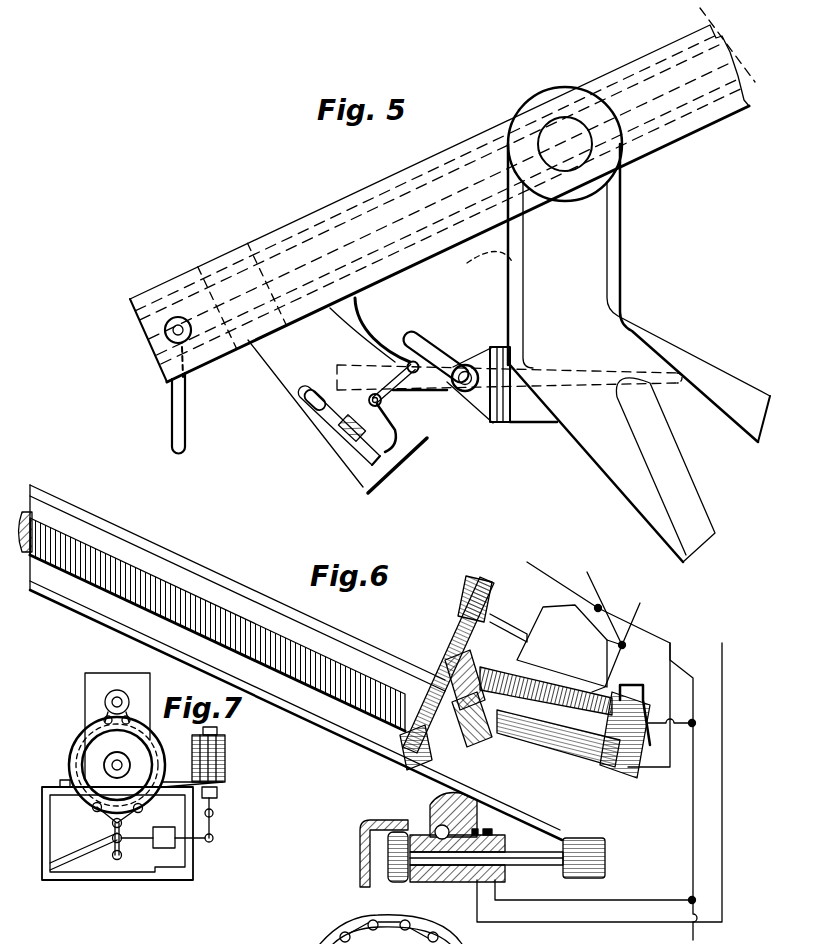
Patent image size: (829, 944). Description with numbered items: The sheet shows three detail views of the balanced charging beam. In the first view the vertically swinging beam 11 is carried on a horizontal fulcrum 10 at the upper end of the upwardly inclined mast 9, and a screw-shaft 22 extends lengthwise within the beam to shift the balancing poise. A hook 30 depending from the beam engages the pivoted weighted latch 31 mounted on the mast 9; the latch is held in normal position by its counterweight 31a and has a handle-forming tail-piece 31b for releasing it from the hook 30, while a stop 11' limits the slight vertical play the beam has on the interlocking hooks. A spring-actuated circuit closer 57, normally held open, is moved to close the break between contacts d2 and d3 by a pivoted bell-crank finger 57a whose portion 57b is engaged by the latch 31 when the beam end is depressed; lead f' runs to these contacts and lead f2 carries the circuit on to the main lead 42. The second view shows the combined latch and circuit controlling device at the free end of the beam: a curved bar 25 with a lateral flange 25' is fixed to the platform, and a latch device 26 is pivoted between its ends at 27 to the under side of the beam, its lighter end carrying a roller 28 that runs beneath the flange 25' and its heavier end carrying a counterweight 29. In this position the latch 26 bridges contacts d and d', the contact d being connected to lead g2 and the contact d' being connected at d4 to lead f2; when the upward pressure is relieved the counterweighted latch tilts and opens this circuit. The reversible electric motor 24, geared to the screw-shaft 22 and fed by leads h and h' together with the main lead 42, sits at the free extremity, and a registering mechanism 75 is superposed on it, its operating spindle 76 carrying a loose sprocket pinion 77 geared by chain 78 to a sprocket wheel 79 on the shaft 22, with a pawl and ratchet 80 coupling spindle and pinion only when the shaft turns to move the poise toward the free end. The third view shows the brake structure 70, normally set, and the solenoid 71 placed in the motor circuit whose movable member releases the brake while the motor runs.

In FIG. 5, the mast 9 is at (677, 354).
In FIG. 5, the horizontal fulcrum 10 is at (548, 134).
In FIG. 5, the beam 11 is at (442, 195).
In FIG. 6, the beam 11 is at (296, 662).
In FIG. 5, the stop 11' is at (618, 353).
In FIG. 5, the screw-shaft 22 is at (390, 220).
In FIG. 6, the screw-shaft 22 is at (360, 712).
In FIG. 6, the reversible electric motor 24 is at (553, 757).
In FIG. 6, the curved bar 25 is at (340, 861).
In FIG. 6, the flange 25' is at (364, 842).
In FIG. 6, the latch device 26 is at (467, 882).
In FIG. 6, the pivot 27 is at (433, 830).
In FIG. 6, the roller 28 is at (402, 883).
In FIG. 6, the counterweight 29 is at (598, 878).
In FIG. 5, the hook 30 is at (380, 327).
In FIG. 5, the pivoted weighted latch 31 is at (430, 360).
In FIG. 5, the counterweight 31a is at (352, 355).
In FIG. 5, the tail-piece 31b is at (556, 368).
In FIG. 6, the main lead 42 is at (636, 646).
In FIG. 5, the circuit closer 57 is at (380, 453).
In FIG. 5, the finger 57a is at (400, 421).
In FIG. 5, the finger portion 57b is at (368, 390).
In FIG. 6, the brake structure 70 is at (605, 777).
In FIG. 7, the brake structure 70 is at (71, 758).
In FIG. 6, the solenoid 71 is at (655, 703).
In FIG. 7, the solenoid 71 is at (224, 774).
In FIG. 6, the registering mechanism 75 is at (541, 610).
In FIG. 6, the operating spindle 76 is at (518, 636).
In FIG. 6, the sprocket pinion 77 is at (480, 587).
In FIG. 6, the chain 78 is at (450, 652).
In FIG. 6, the sprocket wheel 79 is at (408, 745).
In FIG. 6, the pawl and ratchet 80 is at (493, 602).
In FIG. 6, the lead h is at (612, 737).
In FIG. 6, the lead h' is at (597, 600).
In FIG. 6, the contact d is at (499, 867).
In FIG. 6, the contact d' is at (521, 864).
In FIG. 5, the contact d2 is at (369, 473).
In FIG. 5, the contact d3 is at (323, 414).
In FIG. 6, the connection d4 is at (690, 898).
In FIG. 5, the lead f' is at (339, 441).
In FIG. 5, the lead f2 is at (325, 408).
In FIG. 6, the lead f2 is at (694, 937).
In FIG. 6, the lead g2 is at (722, 817).